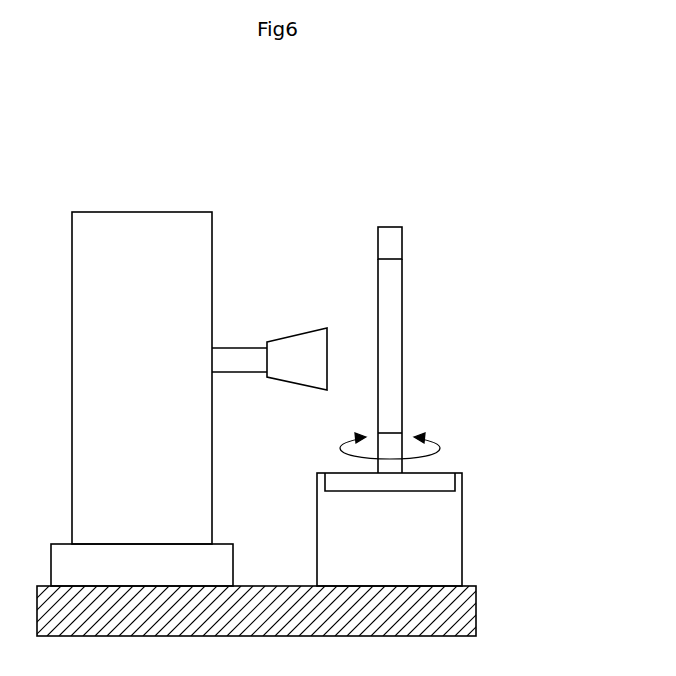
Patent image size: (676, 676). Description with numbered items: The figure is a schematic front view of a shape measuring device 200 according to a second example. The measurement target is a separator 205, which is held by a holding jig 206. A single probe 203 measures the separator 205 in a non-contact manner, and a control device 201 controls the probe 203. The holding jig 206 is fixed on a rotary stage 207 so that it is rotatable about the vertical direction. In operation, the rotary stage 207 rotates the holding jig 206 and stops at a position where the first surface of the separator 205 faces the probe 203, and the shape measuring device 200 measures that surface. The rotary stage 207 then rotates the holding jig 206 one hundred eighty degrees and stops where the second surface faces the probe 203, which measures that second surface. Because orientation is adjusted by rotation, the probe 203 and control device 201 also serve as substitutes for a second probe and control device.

The shape measuring device 200 is at (337, 139).
The control device 201 is at (177, 220).
The probe 203 is at (295, 340).
The separator 205 is at (397, 349).
The holding jig 206 is at (400, 242).
The rotary stage 207 is at (448, 533).